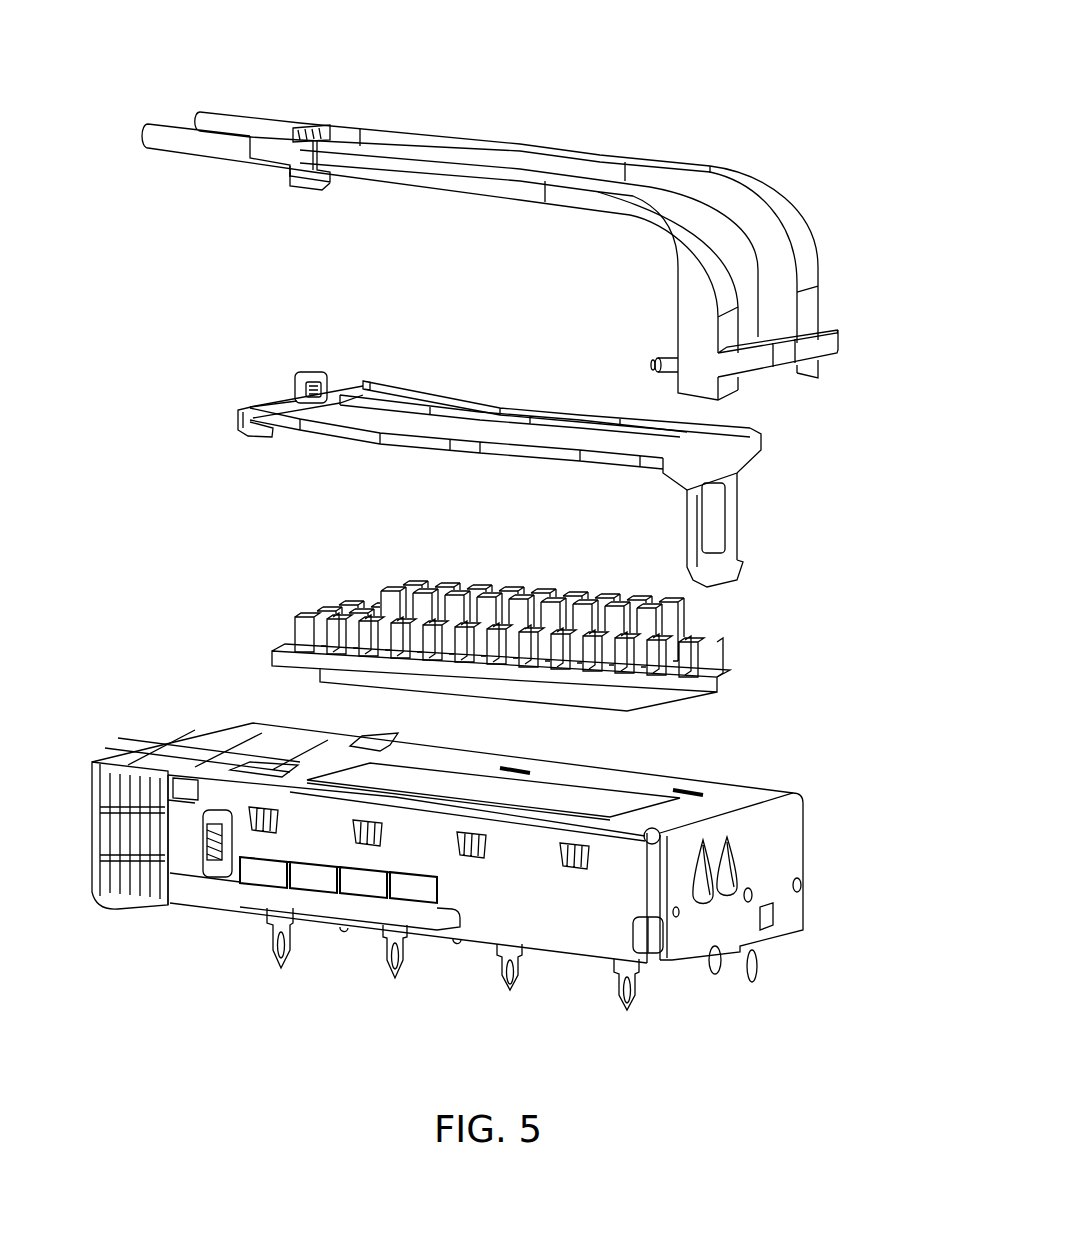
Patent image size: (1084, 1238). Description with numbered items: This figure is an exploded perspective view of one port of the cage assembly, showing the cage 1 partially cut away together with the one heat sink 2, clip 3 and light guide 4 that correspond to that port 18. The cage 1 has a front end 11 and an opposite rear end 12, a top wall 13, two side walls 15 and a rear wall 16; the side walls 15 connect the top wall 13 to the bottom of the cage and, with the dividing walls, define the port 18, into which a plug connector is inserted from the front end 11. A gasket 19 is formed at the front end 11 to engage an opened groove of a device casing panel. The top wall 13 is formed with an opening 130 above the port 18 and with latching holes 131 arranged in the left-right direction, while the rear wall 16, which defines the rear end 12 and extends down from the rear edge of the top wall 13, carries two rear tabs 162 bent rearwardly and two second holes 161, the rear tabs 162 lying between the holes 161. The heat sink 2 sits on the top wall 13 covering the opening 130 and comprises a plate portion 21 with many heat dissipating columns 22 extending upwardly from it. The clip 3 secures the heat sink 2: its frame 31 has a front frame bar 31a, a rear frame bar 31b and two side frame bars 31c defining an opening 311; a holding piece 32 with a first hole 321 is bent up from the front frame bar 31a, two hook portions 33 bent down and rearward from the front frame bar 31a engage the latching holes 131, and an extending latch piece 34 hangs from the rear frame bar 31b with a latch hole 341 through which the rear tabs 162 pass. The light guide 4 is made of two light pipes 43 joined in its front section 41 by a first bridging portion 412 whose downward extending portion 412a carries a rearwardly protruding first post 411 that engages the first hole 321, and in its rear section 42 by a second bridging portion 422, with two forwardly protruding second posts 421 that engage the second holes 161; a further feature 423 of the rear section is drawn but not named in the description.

The cage 1 is at (778, 785).
The front end 11 is at (149, 730).
The rear end 12 is at (808, 870).
The top wall 13 is at (712, 798).
The opening 130 is at (456, 765).
The latching hole 131 is at (339, 742).
The side wall 15 is at (564, 932).
The rear wall 16 is at (780, 835).
The second hole 161 is at (757, 900).
The rear tab 162 is at (726, 898).
The port 18 is at (531, 800).
The gasket 19 is at (210, 740).
The heat sink 2 is at (729, 667).
The plate portion 21 is at (667, 693).
The heat dissipating column 22 is at (650, 633).
The clip 3 is at (767, 480).
The frame 31 is at (500, 457).
The front frame bar 31a is at (282, 402).
The rear frame bar 31b is at (748, 443).
The side frame bar 31c is at (511, 407).
The opening 311 is at (455, 432).
The holding piece 32 is at (308, 372).
The first hole 321 is at (322, 386).
The hook portion 33 is at (242, 438).
The extending latch piece 34 is at (737, 538).
The latch hole 341 is at (713, 518).
The light guide 4 is at (703, 143).
The front section 41 is at (349, 114).
The first post 411 is at (326, 190).
The first bridging portion 412 is at (313, 134).
The downward extending portion 412a is at (288, 176).
The rear section 42 is at (641, 354).
The second post 421 is at (660, 356).
The second bridging portion 422 is at (760, 366).
The pin tip 423 is at (650, 366).
The light pipe 43 is at (771, 198).